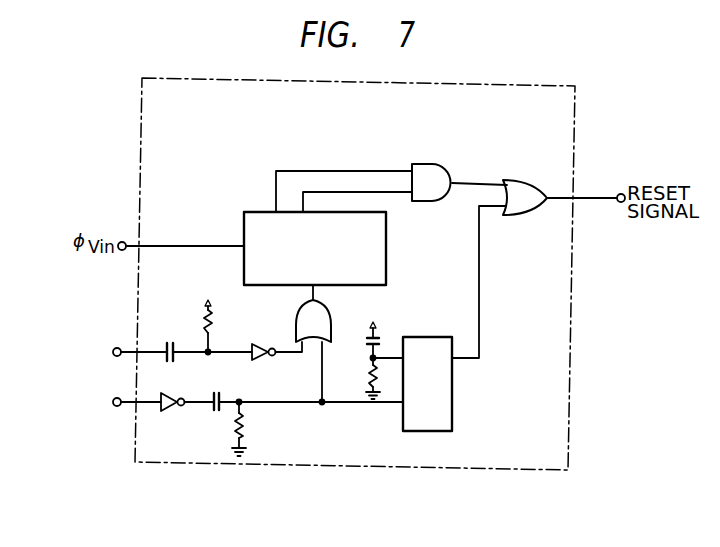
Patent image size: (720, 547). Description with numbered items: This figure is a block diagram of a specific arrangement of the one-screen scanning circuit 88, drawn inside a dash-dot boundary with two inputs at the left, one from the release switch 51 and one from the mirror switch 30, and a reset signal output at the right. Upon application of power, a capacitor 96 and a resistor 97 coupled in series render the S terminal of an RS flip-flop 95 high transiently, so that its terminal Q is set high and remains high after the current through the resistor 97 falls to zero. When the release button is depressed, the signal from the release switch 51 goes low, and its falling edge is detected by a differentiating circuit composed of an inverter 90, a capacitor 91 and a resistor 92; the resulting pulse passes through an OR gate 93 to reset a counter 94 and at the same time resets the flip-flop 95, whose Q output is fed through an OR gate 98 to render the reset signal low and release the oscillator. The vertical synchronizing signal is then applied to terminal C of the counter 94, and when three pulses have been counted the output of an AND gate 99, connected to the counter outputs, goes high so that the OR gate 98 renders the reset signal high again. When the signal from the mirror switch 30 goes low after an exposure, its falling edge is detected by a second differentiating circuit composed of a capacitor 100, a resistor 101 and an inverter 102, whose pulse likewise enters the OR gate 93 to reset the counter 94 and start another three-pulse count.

The mirror switch 30 is at (113, 351).
The release switch 51 is at (113, 404).
The one-screen scanning circuit 88 is at (569, 378).
The inverter 90 is at (175, 409).
The capacitor 91 is at (220, 390).
The resistor 92 is at (245, 428).
The OR gate 93 is at (331, 325).
The counter 94 is at (386, 265).
The RS flip-flop 95 is at (452, 405).
The capacitor 96 is at (380, 340).
The resistor 97 is at (364, 368).
The OR gate 98 is at (528, 180).
The AND gate 99 is at (428, 164).
The capacitor 100 is at (172, 341).
The resistor 101 is at (214, 331).
The inverter 102 is at (262, 360).